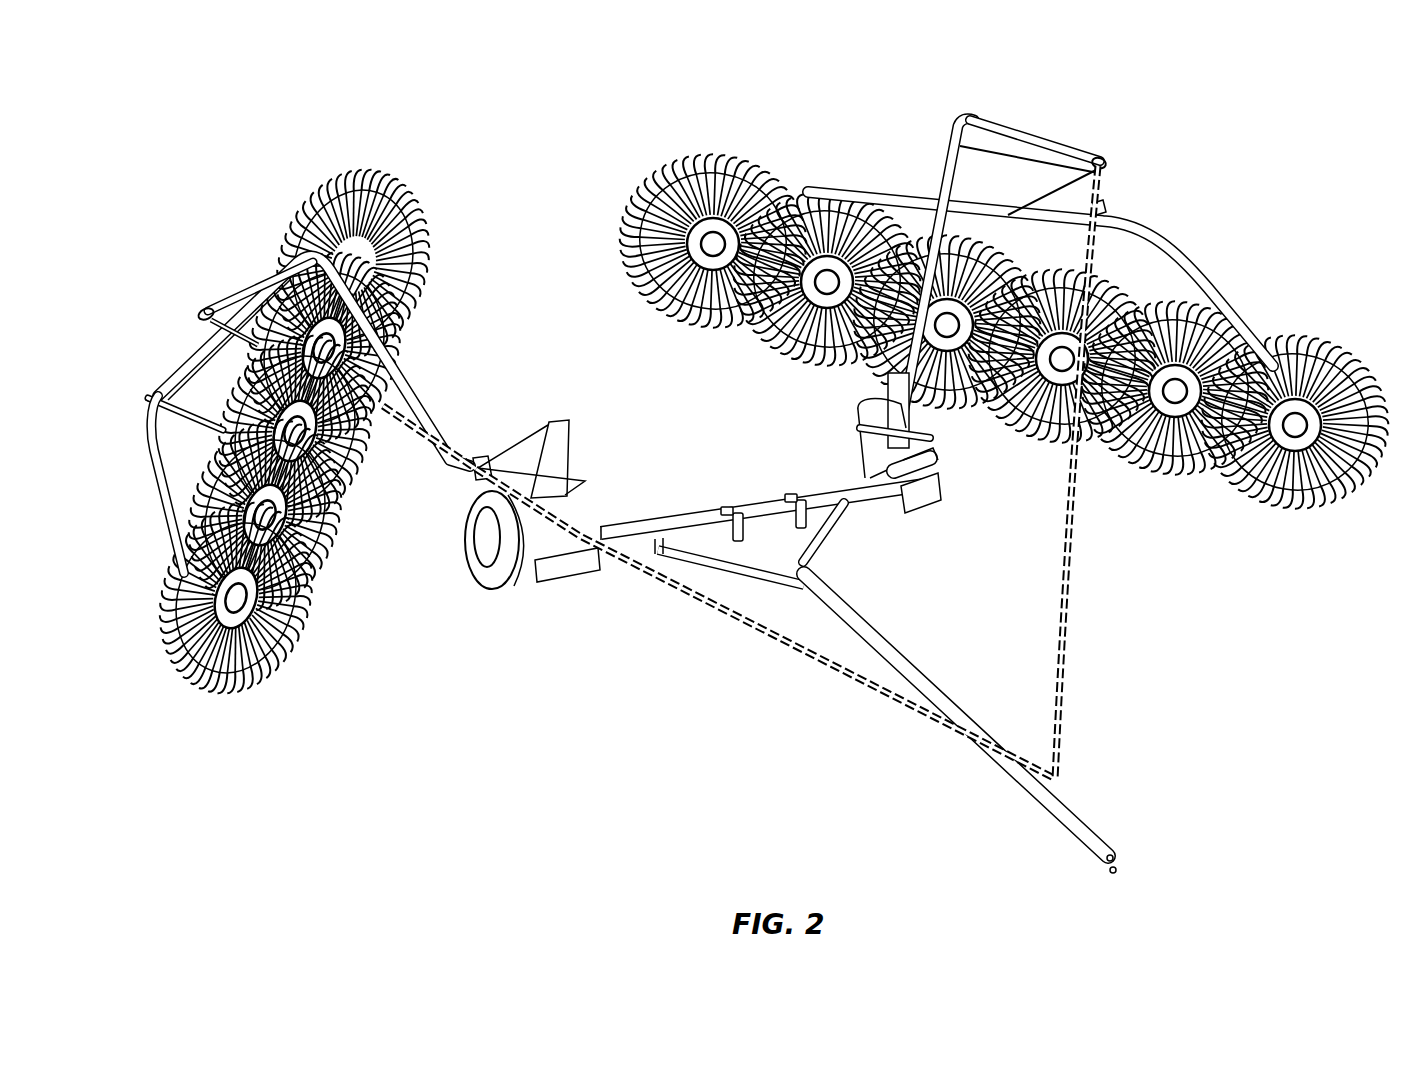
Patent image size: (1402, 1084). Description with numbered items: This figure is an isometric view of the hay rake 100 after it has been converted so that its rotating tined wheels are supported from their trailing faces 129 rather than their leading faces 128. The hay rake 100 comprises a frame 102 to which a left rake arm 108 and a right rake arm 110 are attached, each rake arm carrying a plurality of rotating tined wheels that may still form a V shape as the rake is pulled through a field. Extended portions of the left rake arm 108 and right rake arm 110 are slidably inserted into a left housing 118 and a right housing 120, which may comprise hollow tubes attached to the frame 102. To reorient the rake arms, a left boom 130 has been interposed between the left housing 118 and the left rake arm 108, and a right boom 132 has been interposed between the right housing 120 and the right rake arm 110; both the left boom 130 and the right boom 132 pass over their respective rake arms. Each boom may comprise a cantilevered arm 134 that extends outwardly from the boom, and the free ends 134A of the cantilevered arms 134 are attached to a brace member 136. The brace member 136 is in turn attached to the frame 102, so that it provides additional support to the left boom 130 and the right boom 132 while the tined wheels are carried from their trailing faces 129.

The hay rake 100 is at (176, 115).
The frame 102 is at (887, 643).
The left rake arm 108 is at (142, 450).
The right rake arm 110 is at (1200, 274).
The left housing 118 is at (472, 455).
The right housing 120 is at (922, 422).
The leading face 128 is at (380, 232).
The trailing face 129 is at (305, 210).
The left boom 130 is at (300, 236).
The right boom 132 is at (945, 110).
The cantilevered arm 134 is at (257, 270).
The free end 134A is at (192, 296).
The brace member 136 is at (794, 660).